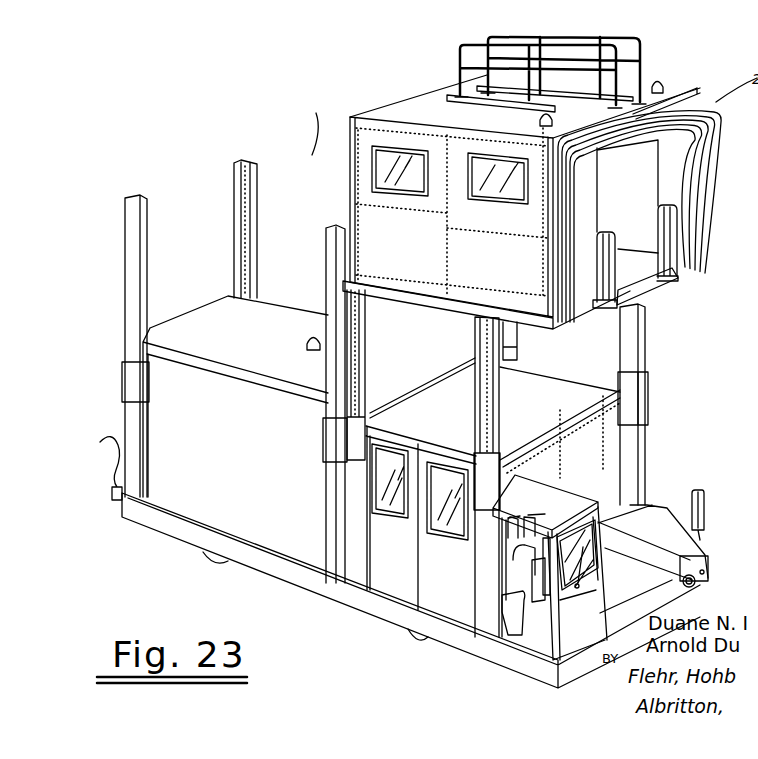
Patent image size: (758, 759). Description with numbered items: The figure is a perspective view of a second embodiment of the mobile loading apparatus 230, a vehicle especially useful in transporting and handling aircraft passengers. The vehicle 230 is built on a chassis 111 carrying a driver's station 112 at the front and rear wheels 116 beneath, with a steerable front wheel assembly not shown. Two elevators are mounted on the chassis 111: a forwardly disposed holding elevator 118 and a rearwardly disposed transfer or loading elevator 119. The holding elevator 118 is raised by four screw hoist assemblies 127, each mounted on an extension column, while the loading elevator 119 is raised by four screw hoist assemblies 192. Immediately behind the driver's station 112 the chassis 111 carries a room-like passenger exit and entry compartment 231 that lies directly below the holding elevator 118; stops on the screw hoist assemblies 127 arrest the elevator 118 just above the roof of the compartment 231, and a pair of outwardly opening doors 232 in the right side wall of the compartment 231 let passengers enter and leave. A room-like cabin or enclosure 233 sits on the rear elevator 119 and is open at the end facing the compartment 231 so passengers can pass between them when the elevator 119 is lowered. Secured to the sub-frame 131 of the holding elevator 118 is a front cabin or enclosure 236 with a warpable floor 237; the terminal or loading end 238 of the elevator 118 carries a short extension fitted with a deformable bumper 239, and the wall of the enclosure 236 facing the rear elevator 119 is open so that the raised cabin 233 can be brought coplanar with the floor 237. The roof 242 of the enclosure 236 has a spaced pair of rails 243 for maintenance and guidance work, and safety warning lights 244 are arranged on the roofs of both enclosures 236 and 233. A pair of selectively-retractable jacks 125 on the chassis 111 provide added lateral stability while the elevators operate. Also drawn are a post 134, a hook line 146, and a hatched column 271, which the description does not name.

The chassis 111 is at (343, 600).
The driver's station 112 is at (512, 624).
The rear wheels 116 is at (212, 560).
The holding elevator 118 is at (521, 192).
The transfer or loading elevator 119 is at (245, 404).
The selectively-retractable jacks 125 is at (418, 650).
The screw hoist assemblies 127 is at (665, 404).
The sub-frame 131 is at (460, 308).
The post collar 134 is at (641, 447).
The hook rope 146 is at (100, 442).
The screw hoist assemblies 192 is at (138, 198).
The mobile loading apparatus 230 is at (303, 134).
The passenger exit and entry compartment 231 is at (567, 388).
The outwardly opening doors 232 is at (425, 588).
The cabin or enclosure 233 is at (292, 310).
The cabin or enclosure 236 is at (676, 80).
The floor 237 is at (640, 268).
The terminal or loading end 238 is at (660, 276).
The deformable bumper 239 is at (670, 286).
The roof 242 is at (418, 92).
The rails 243 is at (636, 42).
The safety warning lights 244 is at (540, 118).
The ladder post 271 is at (368, 322).